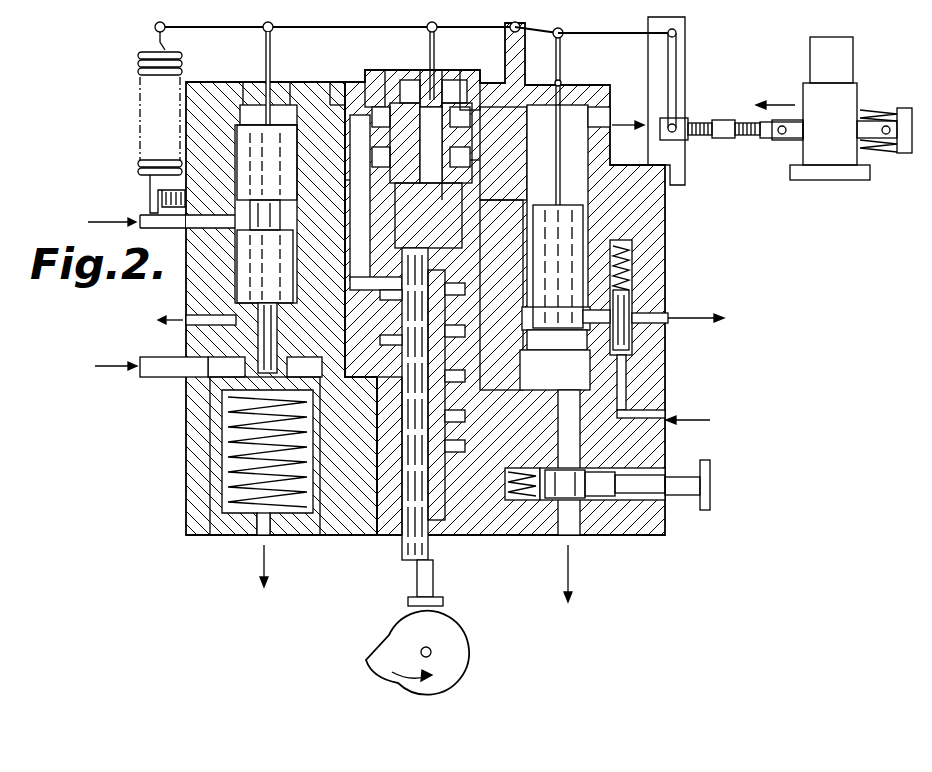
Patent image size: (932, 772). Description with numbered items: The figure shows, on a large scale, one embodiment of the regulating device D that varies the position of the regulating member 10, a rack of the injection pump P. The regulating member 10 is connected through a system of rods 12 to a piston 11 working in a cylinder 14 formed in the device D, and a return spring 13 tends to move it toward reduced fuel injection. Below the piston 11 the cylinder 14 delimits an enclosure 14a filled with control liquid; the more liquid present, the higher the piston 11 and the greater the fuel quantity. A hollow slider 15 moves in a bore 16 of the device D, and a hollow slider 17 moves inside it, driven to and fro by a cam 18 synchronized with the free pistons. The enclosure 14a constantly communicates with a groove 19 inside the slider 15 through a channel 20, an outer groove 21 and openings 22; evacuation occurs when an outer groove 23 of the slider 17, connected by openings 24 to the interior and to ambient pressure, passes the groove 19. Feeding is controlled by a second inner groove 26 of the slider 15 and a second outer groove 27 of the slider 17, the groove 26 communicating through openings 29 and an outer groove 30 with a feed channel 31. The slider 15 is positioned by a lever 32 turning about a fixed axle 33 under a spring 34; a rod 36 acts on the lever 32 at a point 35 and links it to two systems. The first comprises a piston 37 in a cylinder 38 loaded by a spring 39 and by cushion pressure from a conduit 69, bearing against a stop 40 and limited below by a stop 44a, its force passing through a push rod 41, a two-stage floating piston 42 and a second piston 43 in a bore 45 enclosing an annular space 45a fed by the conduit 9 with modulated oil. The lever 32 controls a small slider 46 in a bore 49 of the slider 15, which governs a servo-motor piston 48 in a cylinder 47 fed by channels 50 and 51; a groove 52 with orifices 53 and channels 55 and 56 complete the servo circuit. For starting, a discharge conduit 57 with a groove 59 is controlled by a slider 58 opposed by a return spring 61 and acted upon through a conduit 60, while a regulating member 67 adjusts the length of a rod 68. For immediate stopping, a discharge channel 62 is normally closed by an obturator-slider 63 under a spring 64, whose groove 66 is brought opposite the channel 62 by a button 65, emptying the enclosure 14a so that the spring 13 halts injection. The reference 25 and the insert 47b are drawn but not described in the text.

The regulating device D is at (666, 208).
The injection pump P is at (845, 95).
The conduit 9 is at (138, 216).
The regulating member 10 is at (875, 122).
The piston 11 is at (560, 215).
The system of rods 12 is at (626, 36).
The return spring 13 is at (875, 150).
The cylinder 14 is at (588, 170).
The enclosure 14a is at (555, 375).
The hollow slider 15 is at (476, 222).
The bore 16 is at (377, 412).
The slider 17 is at (440, 540).
The cam 18 is at (450, 628).
The groove 19 is at (385, 362).
The channel 20 is at (518, 362).
The groove 21 is at (466, 332).
The openings 22 is at (466, 378).
The groove 23 is at (466, 446).
The openings 24 is at (466, 418).
The stem end 25 is at (438, 565).
The groove 26 is at (430, 260).
The groove 27 is at (382, 340).
The openings 29 is at (466, 290).
The groove 30 is at (355, 286).
The feed channel 31 is at (350, 160).
The lever 32 is at (285, 28).
The fixed axle 33 is at (558, 28).
The spring 34 is at (138, 70).
The point 35 is at (265, 30).
The rod 36 is at (262, 106).
The piston 37 is at (222, 410).
The cylinder 38 is at (212, 445).
The spring 39 is at (226, 472).
The stop 40 is at (250, 368).
The push rod 41 is at (268, 340).
The two-stage floating piston 42 is at (285, 252).
The second piston 43 is at (272, 120).
The stop 44a is at (258, 530).
The bore 45 is at (236, 160).
The space 45a is at (236, 240).
The small slider 46 is at (432, 95).
The cylinder 47 is at (375, 85).
The insert 47b is at (250, 88).
The piston 48 is at (500, 130).
The bore 49 is at (470, 85).
The channel 50 is at (342, 100).
The channel 51 is at (345, 190).
The groove 52 is at (420, 100).
The orifices 53 is at (420, 135).
The channel 55 is at (340, 110).
The channel 56 is at (472, 160).
The discharge conduit 57 is at (442, 183).
The slider 58 is at (630, 300).
The groove 59 is at (633, 340).
The conduit 60 is at (650, 414).
The return spring 61 is at (632, 246).
The discharge channel 62 is at (555, 496).
The obturator-slider 63 is at (568, 500).
The spring 64 is at (520, 500).
The button 65 is at (708, 475).
The groove 66 is at (615, 500).
The regulating member 67 is at (722, 139).
The rod 68 is at (695, 120).
The conduit 69 is at (160, 360).